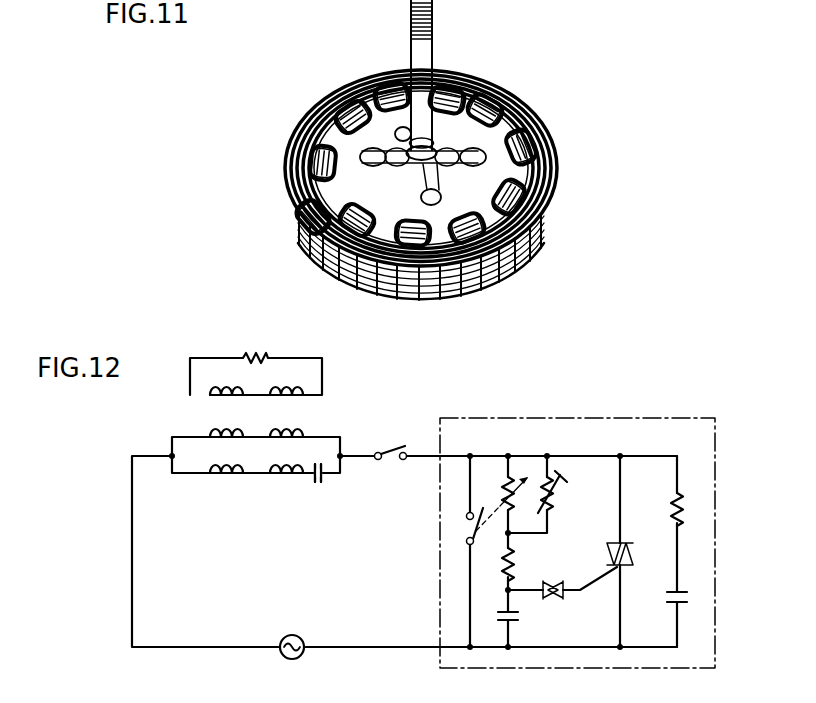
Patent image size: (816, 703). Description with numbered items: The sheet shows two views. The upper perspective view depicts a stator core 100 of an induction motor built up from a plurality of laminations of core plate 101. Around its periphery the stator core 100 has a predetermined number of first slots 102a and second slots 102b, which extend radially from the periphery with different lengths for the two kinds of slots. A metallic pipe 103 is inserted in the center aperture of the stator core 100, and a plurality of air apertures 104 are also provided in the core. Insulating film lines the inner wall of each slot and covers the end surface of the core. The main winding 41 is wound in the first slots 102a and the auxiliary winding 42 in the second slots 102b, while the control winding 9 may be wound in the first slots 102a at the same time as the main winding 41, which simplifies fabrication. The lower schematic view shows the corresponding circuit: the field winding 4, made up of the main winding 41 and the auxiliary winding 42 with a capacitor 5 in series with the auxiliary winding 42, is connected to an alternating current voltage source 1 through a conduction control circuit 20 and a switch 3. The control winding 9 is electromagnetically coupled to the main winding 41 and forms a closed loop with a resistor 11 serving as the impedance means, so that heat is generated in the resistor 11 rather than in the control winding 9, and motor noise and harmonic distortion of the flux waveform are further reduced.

In FIG. 12, the alternating current voltage source 1 is at (300, 641).
In FIG. 12, the switch 3 is at (391, 462).
In FIG. 12, the field winding 4 is at (286, 491).
In FIG. 12, the capacitor 5 is at (318, 487).
In FIG. 11, the control winding 9 is at (520, 262).
In FIG. 12, the control winding 9 is at (235, 397).
In FIG. 12, the resistor 11 is at (267, 357).
In FIG. 12, the conduction control circuit 20 is at (440, 578).
In FIG. 11, the main winding 41 is at (545, 210).
In FIG. 12, the main winding 41 is at (252, 437).
In FIG. 11, the auxiliary winding 42 is at (496, 194).
In FIG. 12, the auxiliary winding 42 is at (280, 478).
In FIG. 11, the stator core 100 is at (410, 165).
In FIG. 11, the core plate 101 is at (477, 289).
In FIG. 11, the first slots 102a is at (298, 120).
In FIG. 11, the second slots 102b is at (360, 75).
In FIG. 11, the metallic pipe 103 is at (427, 50).
In FIG. 11, the air apertures 104 is at (510, 92).